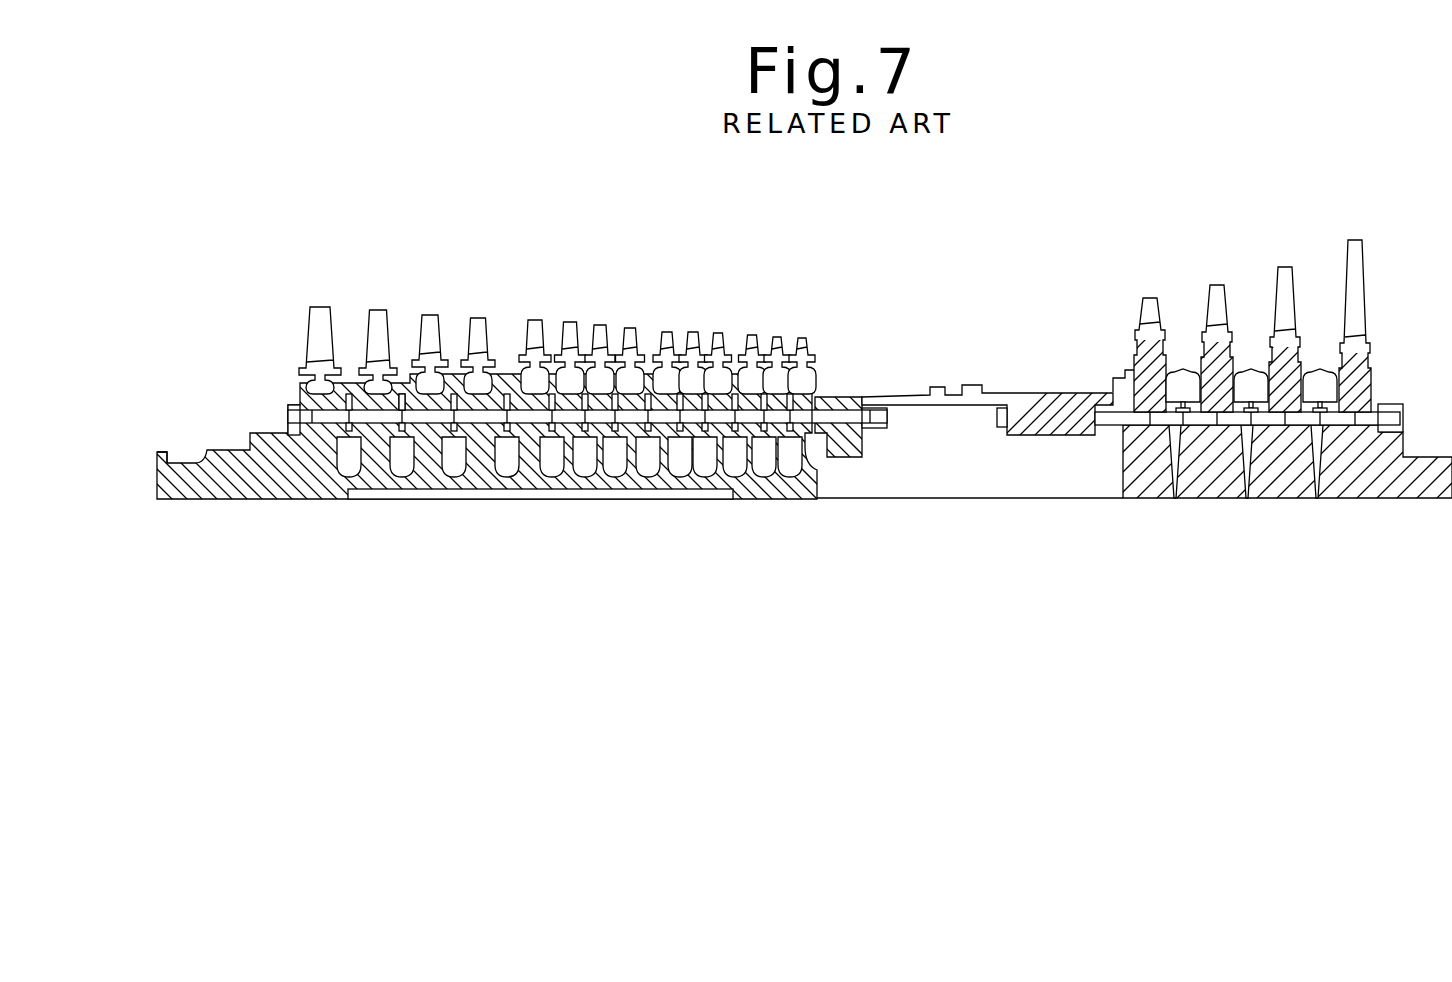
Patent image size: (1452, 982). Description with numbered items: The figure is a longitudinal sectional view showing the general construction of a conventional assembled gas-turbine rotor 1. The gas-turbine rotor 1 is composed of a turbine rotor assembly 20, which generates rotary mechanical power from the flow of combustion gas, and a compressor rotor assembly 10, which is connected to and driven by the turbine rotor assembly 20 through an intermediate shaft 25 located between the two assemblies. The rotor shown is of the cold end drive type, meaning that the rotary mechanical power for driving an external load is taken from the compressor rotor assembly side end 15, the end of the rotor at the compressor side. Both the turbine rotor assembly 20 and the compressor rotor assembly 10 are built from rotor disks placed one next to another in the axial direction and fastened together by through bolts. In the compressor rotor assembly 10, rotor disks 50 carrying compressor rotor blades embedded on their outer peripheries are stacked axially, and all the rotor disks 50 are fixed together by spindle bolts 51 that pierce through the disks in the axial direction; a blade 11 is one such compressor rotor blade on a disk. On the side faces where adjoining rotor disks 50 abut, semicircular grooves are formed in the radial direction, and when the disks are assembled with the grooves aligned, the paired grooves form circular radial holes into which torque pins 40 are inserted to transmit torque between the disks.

The gas-turbine rotor 1 is at (717, 537).
The compressor rotor assembly 10 is at (557, 312).
The rotor blade 11 is at (430, 320).
The compressor rotor assembly side end 15 is at (158, 448).
The turbine rotor assembly 20 is at (1303, 248).
The intermediate shaft 25 is at (962, 367).
The torque pin 40 is at (402, 392).
The rotor disk 50 is at (363, 390).
The spindle bolt 51 is at (879, 430).